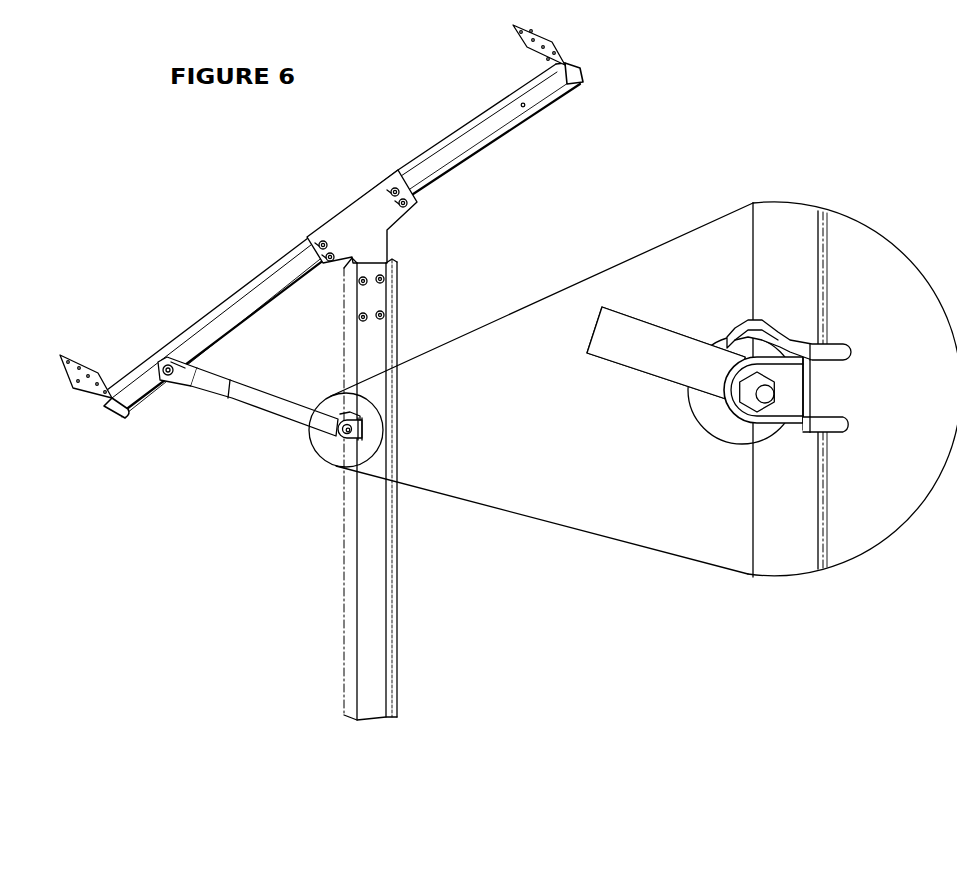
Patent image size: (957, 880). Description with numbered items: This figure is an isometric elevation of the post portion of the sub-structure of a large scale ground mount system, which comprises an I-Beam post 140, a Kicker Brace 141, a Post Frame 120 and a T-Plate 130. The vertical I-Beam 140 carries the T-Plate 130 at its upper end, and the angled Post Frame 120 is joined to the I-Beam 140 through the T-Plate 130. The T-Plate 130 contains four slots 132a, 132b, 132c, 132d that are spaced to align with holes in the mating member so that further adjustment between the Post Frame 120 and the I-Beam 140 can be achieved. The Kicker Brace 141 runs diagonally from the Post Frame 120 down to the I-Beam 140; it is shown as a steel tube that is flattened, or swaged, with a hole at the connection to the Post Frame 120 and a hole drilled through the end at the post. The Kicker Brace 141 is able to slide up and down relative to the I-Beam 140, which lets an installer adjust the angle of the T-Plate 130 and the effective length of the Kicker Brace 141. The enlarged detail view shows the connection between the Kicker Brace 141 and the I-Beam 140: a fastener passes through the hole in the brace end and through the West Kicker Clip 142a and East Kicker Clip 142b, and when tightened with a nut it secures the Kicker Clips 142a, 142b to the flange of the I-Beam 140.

The Post Frame 120 is at (250, 283).
The T-Plate 130 is at (352, 207).
The slot 132a is at (393, 191).
The slot 132b is at (405, 206).
The slot 132c is at (328, 259).
The slot 132d is at (322, 246).
The I-Beam 140 is at (398, 290).
The Kicker Brace 141 is at (273, 399).
The West Kicker Clip 142a is at (740, 320).
The East Kicker Clip 142b is at (732, 423).